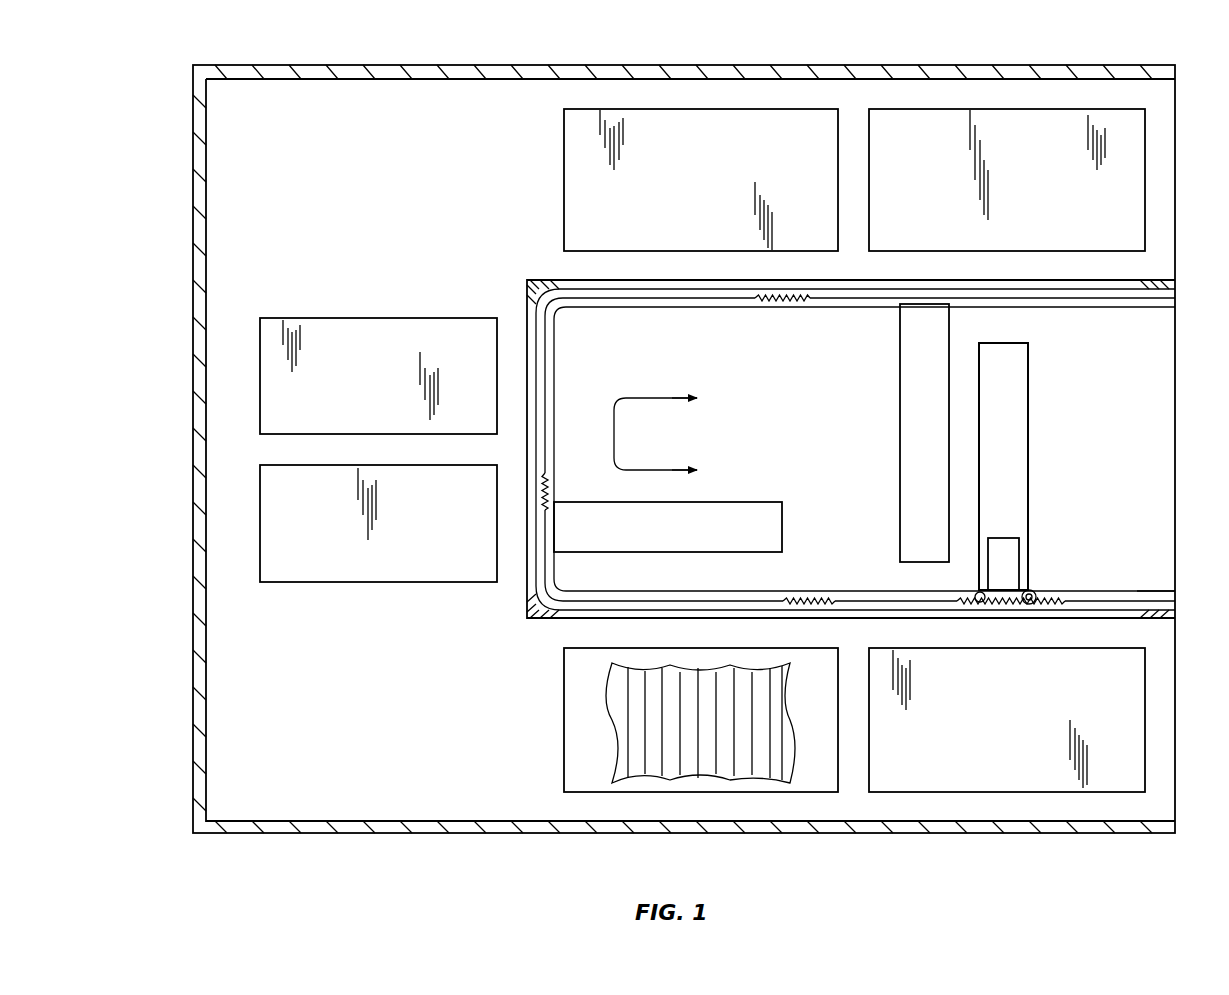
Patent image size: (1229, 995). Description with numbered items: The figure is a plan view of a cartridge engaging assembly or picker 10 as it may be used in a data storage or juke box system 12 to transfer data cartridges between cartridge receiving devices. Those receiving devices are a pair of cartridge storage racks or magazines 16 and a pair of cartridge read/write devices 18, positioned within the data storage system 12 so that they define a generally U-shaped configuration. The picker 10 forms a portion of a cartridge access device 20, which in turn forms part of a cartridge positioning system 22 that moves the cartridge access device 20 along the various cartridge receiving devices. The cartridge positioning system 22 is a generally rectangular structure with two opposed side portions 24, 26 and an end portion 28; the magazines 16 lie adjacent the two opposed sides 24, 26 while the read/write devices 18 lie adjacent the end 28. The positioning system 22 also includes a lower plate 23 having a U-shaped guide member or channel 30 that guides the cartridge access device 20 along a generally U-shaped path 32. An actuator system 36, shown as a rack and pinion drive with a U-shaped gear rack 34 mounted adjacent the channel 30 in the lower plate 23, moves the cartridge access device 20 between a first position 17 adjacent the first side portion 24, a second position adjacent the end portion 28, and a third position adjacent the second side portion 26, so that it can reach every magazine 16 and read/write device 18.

The cartridge engaging assembly 10 is at (1042, 470).
The data storage system 12 is at (300, 62).
The cartridge storage racks or magazines 16 is at (823, 109).
The first position 17 is at (1028, 420).
The cartridge read/write devices 18 is at (290, 465).
The cartridge access device 20 is at (1028, 368).
The cartridge positioning system 22 is at (1148, 587).
The lower plate 23 is at (1110, 503).
The first side portion 24 is at (1120, 618).
The second side portion 26 is at (1120, 280).
The end portion 28 is at (527, 593).
The U-shaped guide member or channel 30 is at (545, 355).
The U-shaped path 32 is at (614, 434).
The U-shaped gear rack 34 is at (826, 600).
The actuator system 36 is at (1036, 586).